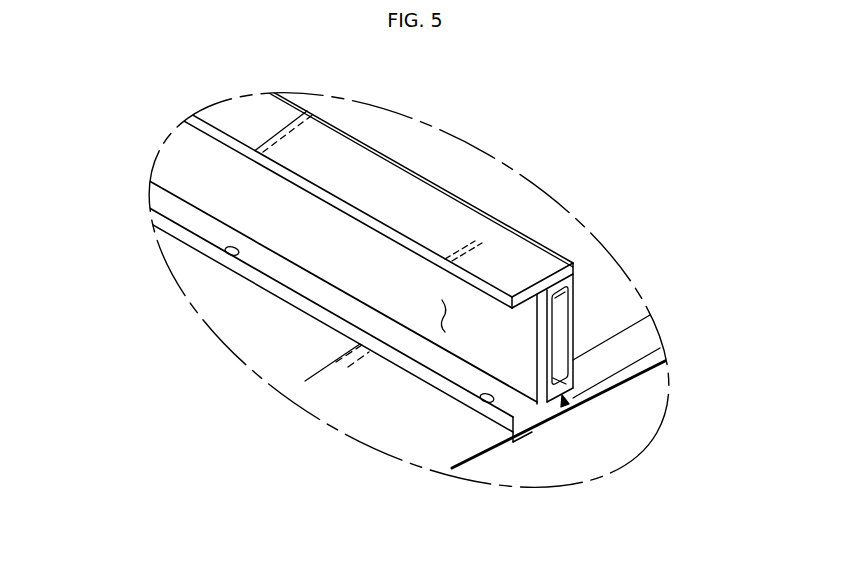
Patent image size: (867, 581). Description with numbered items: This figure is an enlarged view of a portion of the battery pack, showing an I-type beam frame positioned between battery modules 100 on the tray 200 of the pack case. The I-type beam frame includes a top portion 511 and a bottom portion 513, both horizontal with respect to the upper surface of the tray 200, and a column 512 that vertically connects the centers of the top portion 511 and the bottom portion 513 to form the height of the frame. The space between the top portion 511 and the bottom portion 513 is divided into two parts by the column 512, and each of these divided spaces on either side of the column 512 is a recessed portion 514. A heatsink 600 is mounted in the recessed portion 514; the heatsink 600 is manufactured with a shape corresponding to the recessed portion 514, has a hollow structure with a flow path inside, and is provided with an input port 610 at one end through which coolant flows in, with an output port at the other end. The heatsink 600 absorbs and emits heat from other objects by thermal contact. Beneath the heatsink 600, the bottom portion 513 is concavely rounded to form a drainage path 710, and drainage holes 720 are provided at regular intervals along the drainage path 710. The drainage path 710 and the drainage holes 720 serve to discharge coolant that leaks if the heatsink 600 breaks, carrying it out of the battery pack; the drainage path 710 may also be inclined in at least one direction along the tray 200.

The battery module 100 is at (597, 275).
The tray 200 is at (640, 340).
The top portion 511 is at (365, 165).
The column 512 is at (560, 373).
The bottom portion 513 is at (546, 357).
The recessed portion 514 is at (445, 322).
The heatsink 600 is at (566, 408).
The input port 610 is at (558, 327).
The drainage path 710 is at (340, 308).
The drainage hole 720 is at (226, 251).